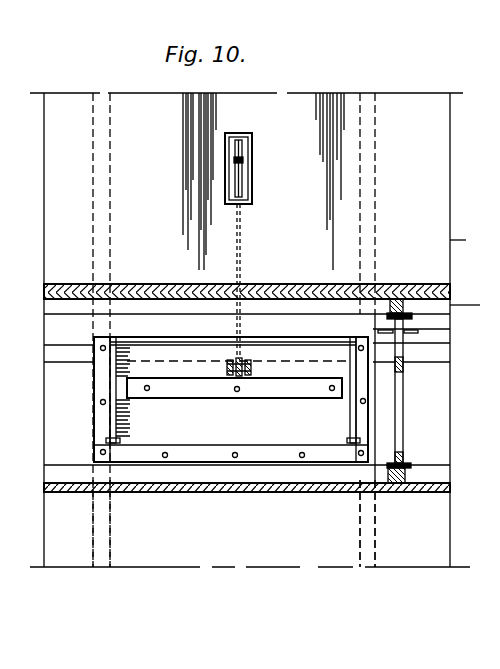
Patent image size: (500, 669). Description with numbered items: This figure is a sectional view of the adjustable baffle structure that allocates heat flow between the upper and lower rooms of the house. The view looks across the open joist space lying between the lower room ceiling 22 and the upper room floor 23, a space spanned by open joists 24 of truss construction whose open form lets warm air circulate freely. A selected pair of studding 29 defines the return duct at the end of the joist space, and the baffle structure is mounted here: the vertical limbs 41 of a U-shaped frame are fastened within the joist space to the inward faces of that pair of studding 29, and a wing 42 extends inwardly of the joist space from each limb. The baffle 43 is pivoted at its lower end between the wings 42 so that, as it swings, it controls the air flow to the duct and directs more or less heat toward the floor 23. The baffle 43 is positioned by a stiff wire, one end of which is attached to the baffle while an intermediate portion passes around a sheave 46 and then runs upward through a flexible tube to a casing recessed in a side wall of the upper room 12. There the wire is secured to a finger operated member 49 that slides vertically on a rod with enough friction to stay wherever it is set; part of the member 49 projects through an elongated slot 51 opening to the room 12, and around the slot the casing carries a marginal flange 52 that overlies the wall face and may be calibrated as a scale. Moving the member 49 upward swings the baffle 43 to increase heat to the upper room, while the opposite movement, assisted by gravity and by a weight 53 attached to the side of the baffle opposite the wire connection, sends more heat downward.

The upper room 12 is at (237, 181).
The lower room ceiling 22 is at (172, 492).
The upper room floor 23 is at (130, 283).
The open joist 24 is at (404, 385).
The studding 29 is at (110, 550).
The vertical limb 41 is at (103, 377).
The wing 42 is at (113, 417).
The baffle 43 is at (233, 395).
The sheave 46 is at (255, 372).
The finger operated member 49 is at (472, 238).
The elongated slot 51 is at (475, 304).
The marginal flange 52 is at (252, 188).
The weight 53 is at (287, 396).